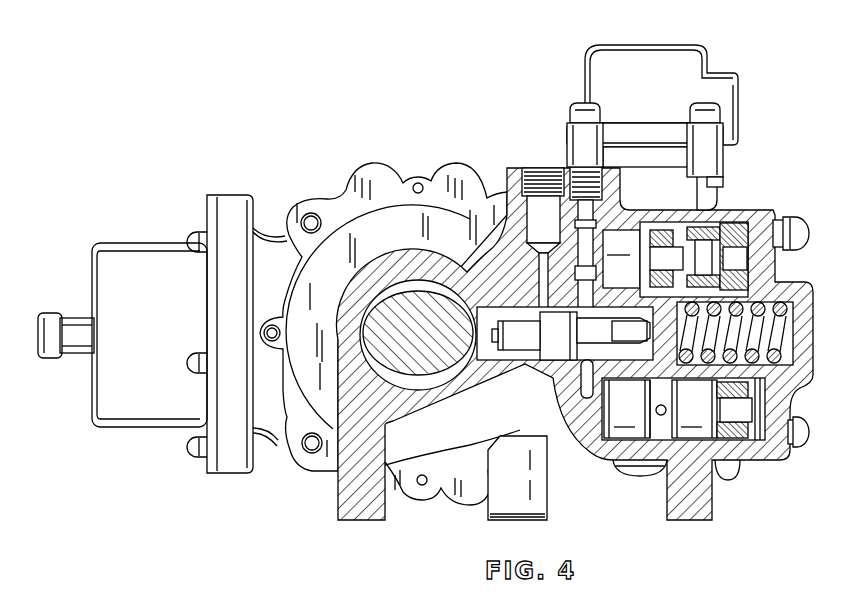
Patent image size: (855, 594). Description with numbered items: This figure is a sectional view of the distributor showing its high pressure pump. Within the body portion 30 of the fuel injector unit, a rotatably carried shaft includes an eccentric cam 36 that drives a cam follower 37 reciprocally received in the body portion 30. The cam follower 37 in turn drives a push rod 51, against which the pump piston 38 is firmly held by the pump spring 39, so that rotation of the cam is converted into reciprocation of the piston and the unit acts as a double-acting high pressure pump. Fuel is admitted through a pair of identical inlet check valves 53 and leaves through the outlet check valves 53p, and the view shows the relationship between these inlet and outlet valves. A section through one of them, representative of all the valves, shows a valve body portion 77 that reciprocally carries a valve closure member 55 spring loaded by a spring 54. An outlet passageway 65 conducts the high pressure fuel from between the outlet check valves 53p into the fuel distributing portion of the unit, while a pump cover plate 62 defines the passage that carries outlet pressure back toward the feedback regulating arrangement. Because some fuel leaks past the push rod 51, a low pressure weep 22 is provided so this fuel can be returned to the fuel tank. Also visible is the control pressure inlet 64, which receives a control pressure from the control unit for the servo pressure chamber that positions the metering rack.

The body portion 30 is at (378, 177).
The low pressure weep 22 is at (534, 168).
The eccentric cam 36 is at (403, 317).
The cam follower 37 is at (481, 322).
The pump piston 38 is at (637, 334).
The pump spring 39 is at (763, 312).
The push rod 51 is at (638, 335).
The inlet check valves 53 is at (707, 210).
The outlet check valves 53p is at (660, 409).
The spring 54 is at (718, 228).
The valve closure member 55 is at (703, 253).
The pump cover plate 62 is at (803, 353).
The control pressure inlet 64 is at (722, 101).
The outlet passageway 65 is at (665, 408).
The body portion 77 is at (689, 233).